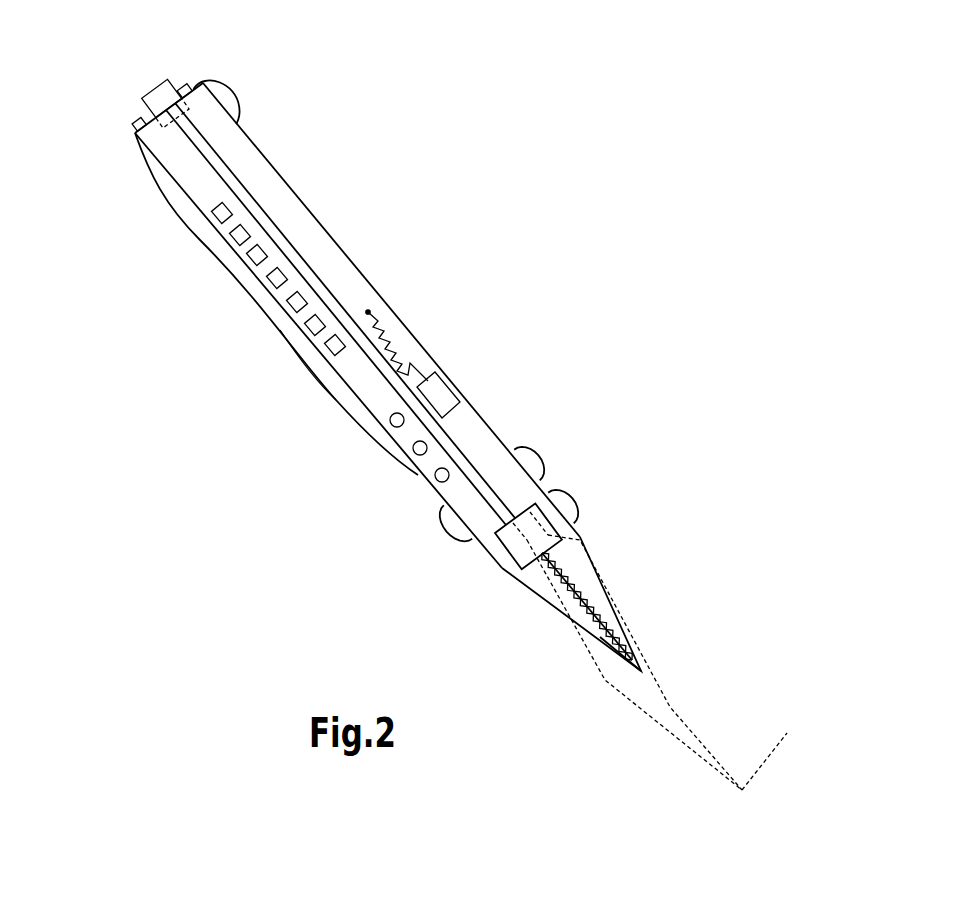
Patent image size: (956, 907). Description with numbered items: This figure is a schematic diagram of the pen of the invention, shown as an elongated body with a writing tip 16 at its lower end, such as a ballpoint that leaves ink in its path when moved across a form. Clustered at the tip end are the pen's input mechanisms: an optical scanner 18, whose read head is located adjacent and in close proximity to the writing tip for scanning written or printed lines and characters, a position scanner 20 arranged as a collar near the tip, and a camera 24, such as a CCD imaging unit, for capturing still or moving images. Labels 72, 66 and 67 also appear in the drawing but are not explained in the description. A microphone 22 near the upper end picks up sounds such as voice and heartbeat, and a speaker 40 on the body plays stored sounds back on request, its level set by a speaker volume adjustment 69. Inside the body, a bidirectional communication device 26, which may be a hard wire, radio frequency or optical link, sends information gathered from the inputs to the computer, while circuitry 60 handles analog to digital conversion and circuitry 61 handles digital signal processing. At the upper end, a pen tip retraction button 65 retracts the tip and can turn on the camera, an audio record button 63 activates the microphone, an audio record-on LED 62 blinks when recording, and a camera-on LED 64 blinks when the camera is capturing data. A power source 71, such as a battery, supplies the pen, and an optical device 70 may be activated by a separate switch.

The writing tip 16 is at (630, 676).
The optical scanner 18 is at (694, 662).
The position scanner 20 is at (513, 546).
The microphone 22 is at (241, 87).
The camera 24 is at (657, 662).
The bidirectional communication device 26 is at (437, 388).
The speaker 40 is at (585, 487).
The circuitry 60 is at (257, 298).
The circuitry 61 is at (280, 312).
The audio record-on LED 62 is at (195, 80).
The audio record button 63 is at (441, 534).
The camera-on LED 64 is at (130, 114).
The pen tip retraction button 65 is at (166, 70).
The housing 66 is at (181, 232).
The housing edge 67 is at (330, 406).
The speaker volume adjustment 69 is at (548, 442).
The optical device 70 is at (196, 116).
The power source 71 is at (420, 452).
The tip sensor 72 is at (582, 665).